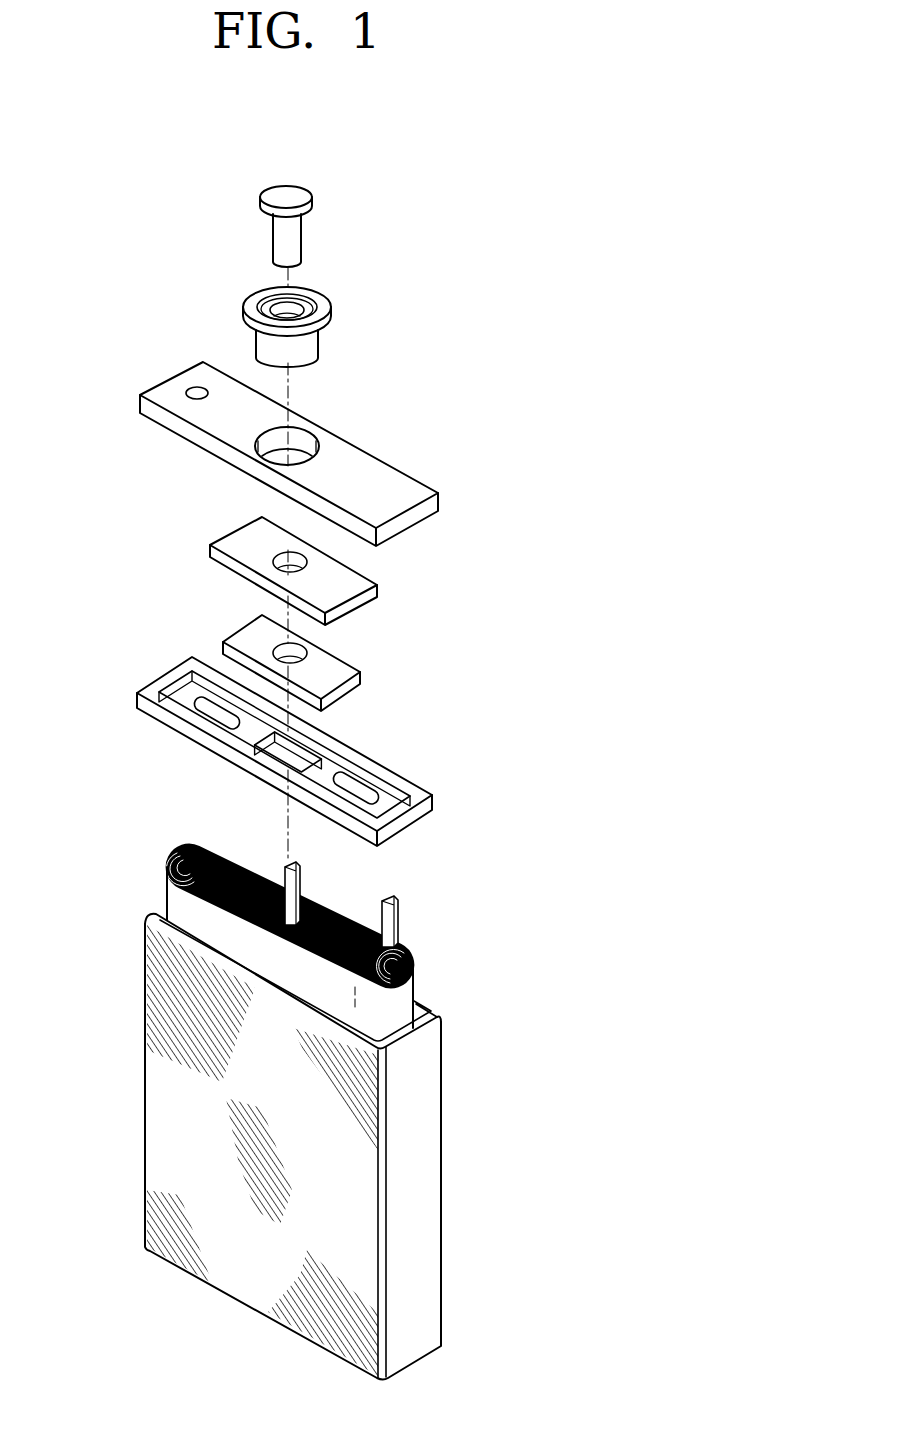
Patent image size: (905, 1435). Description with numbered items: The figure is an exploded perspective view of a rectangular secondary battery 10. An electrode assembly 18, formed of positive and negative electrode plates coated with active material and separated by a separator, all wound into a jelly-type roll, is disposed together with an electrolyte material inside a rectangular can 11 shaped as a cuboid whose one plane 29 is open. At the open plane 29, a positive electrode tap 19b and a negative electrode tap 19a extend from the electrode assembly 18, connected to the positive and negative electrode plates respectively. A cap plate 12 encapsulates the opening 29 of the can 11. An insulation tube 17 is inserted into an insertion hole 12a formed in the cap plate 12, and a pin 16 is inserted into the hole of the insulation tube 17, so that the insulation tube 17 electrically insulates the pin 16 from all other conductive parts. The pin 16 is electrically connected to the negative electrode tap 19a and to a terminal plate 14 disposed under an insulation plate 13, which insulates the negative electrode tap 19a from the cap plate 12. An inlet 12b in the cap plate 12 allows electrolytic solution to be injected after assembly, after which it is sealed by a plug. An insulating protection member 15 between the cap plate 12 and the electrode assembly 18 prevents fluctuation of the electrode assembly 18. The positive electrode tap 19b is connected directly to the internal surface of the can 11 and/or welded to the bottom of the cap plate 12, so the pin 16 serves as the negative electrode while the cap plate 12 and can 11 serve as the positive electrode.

The rectangular battery 10 is at (514, 250).
The can 11 is at (428, 1085).
The cap plate 12 is at (396, 481).
The insertion hole 12a is at (298, 451).
The inlet 12b is at (195, 389).
The insulation plate 13 is at (357, 582).
The terminal plate 14 is at (337, 673).
The insulating protection member 15 is at (393, 781).
The pin 16 is at (280, 247).
The insulation tube 17 is at (325, 305).
The electrode assembly 18 is at (402, 1002).
The negative electrode tap 19a is at (285, 861).
The positive electrode tap 19b is at (391, 896).
The open plane 29 is at (155, 912).